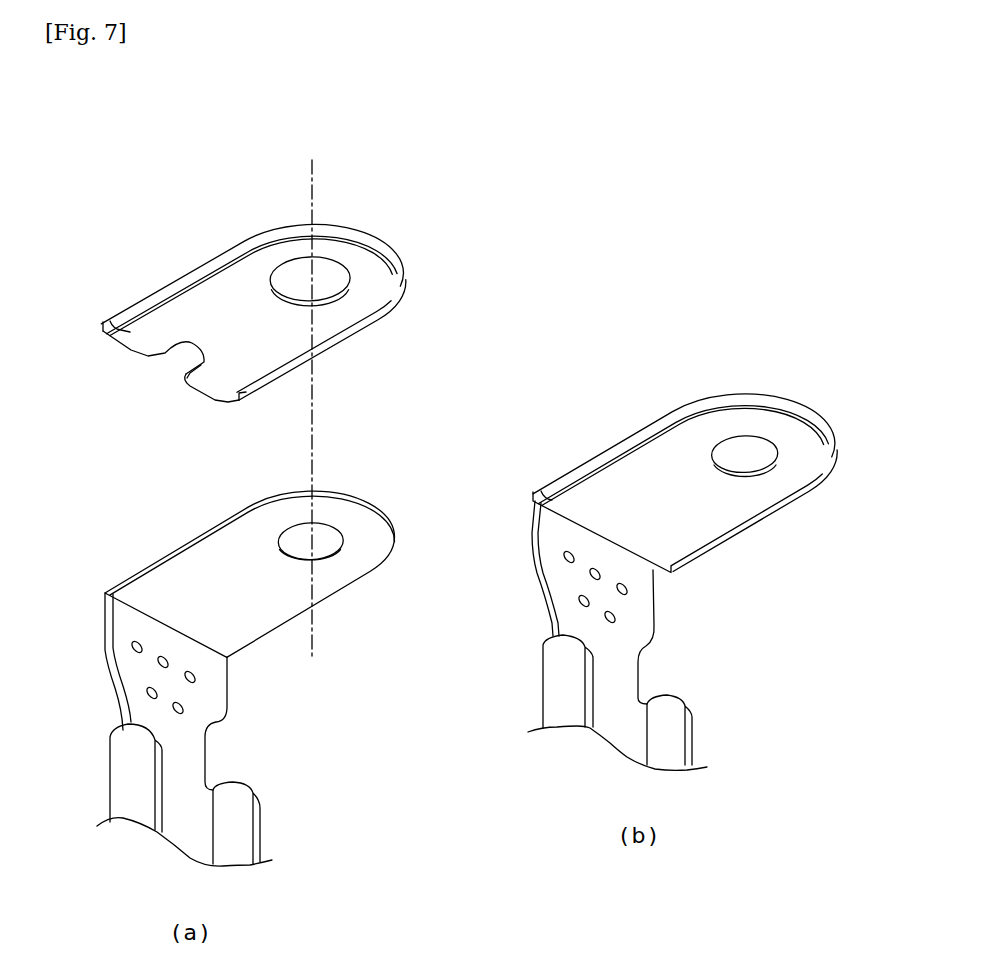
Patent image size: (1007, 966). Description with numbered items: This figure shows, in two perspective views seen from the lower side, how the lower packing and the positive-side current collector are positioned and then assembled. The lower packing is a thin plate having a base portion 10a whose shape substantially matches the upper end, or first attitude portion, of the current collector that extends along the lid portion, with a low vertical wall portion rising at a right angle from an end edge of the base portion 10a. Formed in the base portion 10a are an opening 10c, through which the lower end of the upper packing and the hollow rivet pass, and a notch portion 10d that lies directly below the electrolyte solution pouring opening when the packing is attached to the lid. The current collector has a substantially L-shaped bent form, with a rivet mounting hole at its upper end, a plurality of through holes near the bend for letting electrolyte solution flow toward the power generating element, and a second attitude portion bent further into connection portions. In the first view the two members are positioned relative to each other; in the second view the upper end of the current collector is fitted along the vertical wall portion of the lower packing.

The base portion 10a is at (224, 372).
The opening 10c is at (348, 287).
The notch portion 10d is at (169, 358).